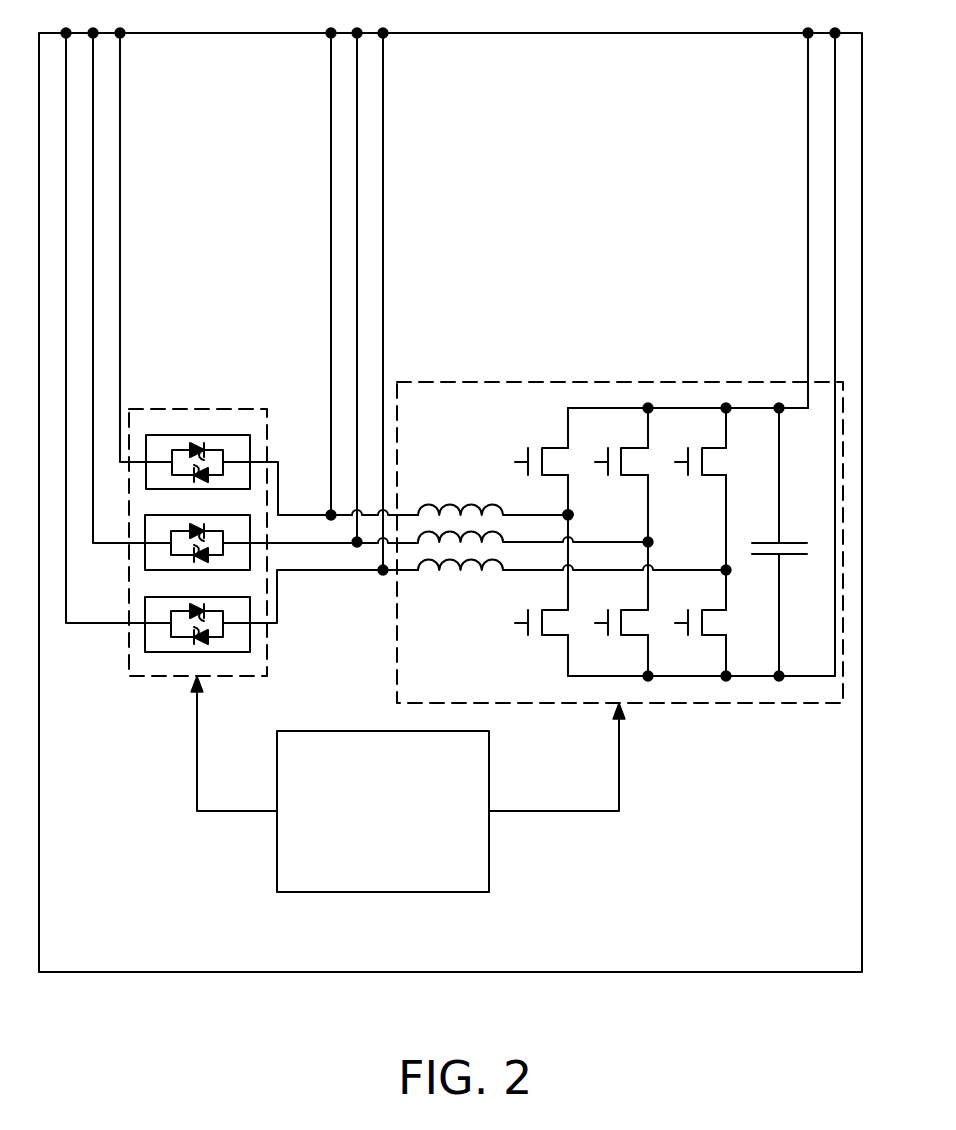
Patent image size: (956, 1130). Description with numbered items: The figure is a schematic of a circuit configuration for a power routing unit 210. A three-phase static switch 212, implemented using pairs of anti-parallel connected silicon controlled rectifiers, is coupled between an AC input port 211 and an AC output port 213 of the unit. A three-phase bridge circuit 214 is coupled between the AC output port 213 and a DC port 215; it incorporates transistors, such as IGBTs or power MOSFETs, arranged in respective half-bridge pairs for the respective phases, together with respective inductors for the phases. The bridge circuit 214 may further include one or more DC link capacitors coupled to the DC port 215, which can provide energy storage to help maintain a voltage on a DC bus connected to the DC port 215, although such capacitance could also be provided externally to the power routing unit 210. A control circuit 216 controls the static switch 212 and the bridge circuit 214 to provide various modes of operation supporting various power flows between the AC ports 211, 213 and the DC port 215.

The power routing unit 210 is at (449, 972).
The AC input port 211 is at (142, 69).
The three-phase static switch 212 is at (198, 409).
The AC output port 213 is at (412, 71).
The three-phase bridge circuit 214 is at (620, 382).
The DC port 215 is at (729, 75).
The control circuit 216 is at (384, 892).